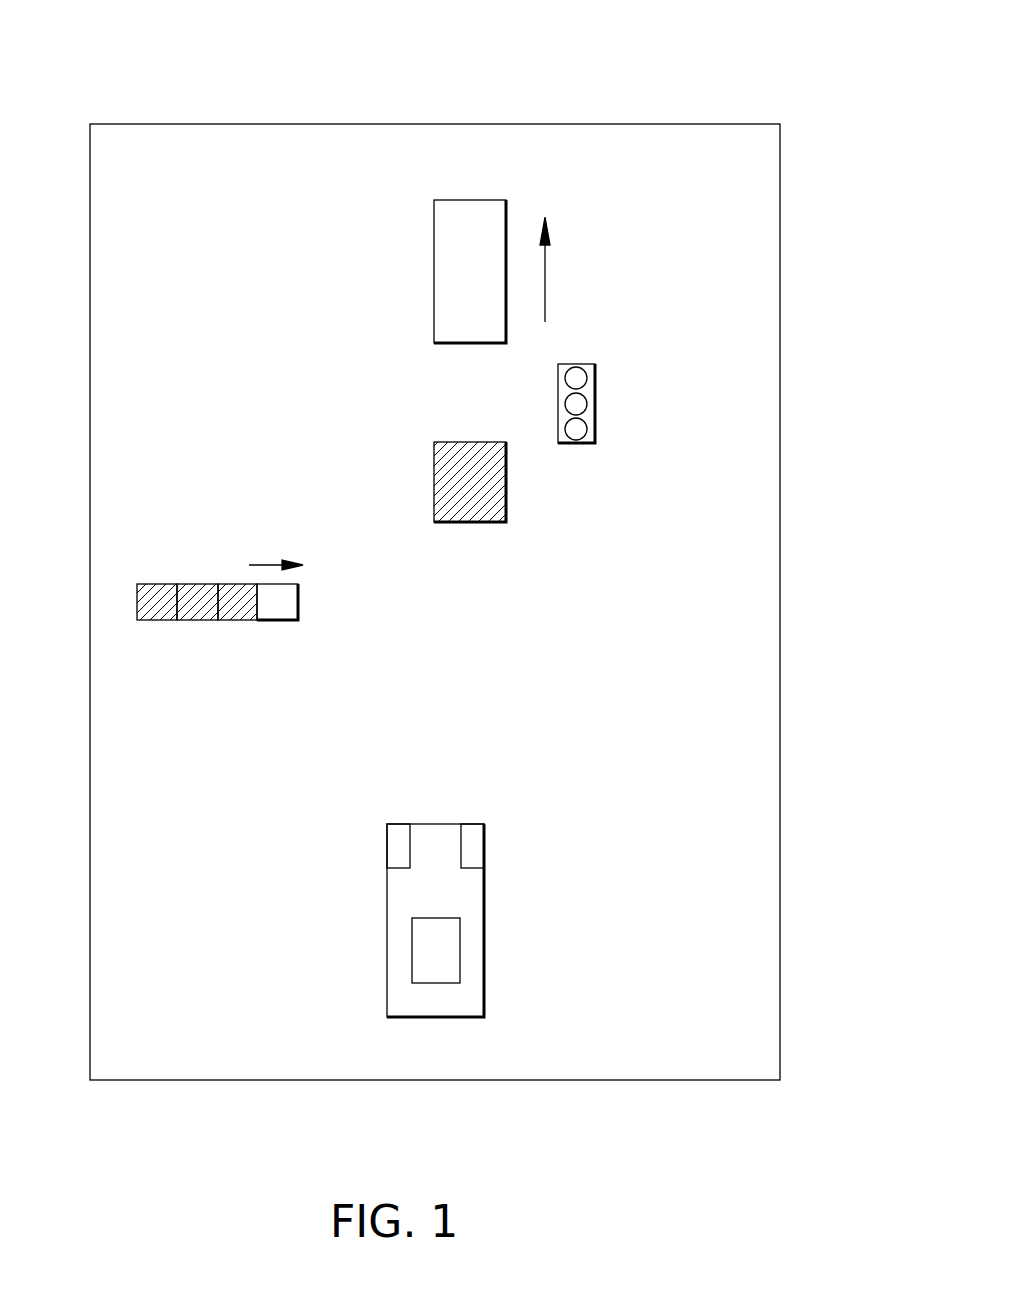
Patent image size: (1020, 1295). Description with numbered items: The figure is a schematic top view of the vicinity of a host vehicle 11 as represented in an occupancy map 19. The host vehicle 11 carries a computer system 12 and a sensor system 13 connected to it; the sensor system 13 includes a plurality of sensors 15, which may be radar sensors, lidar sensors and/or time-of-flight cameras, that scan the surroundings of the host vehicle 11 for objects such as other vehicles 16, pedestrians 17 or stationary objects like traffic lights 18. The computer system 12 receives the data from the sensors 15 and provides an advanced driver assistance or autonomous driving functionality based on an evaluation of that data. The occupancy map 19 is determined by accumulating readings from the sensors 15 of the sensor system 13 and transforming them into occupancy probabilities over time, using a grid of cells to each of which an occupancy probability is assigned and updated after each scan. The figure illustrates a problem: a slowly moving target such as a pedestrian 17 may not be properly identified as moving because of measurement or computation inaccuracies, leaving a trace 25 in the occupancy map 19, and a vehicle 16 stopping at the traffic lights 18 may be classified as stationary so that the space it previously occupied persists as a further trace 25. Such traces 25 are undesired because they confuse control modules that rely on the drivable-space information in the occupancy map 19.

The host vehicle 11 is at (484, 952).
The computer system 12 is at (420, 958).
The sensor system 13 is at (502, 825).
The sensors 15 is at (393, 847).
The other vehicle 16 is at (440, 252).
The pedestrian 17 is at (277, 614).
The traffic lights 18 is at (595, 412).
The occupancy map 19 is at (608, 124).
The trace 25 is at (506, 511).